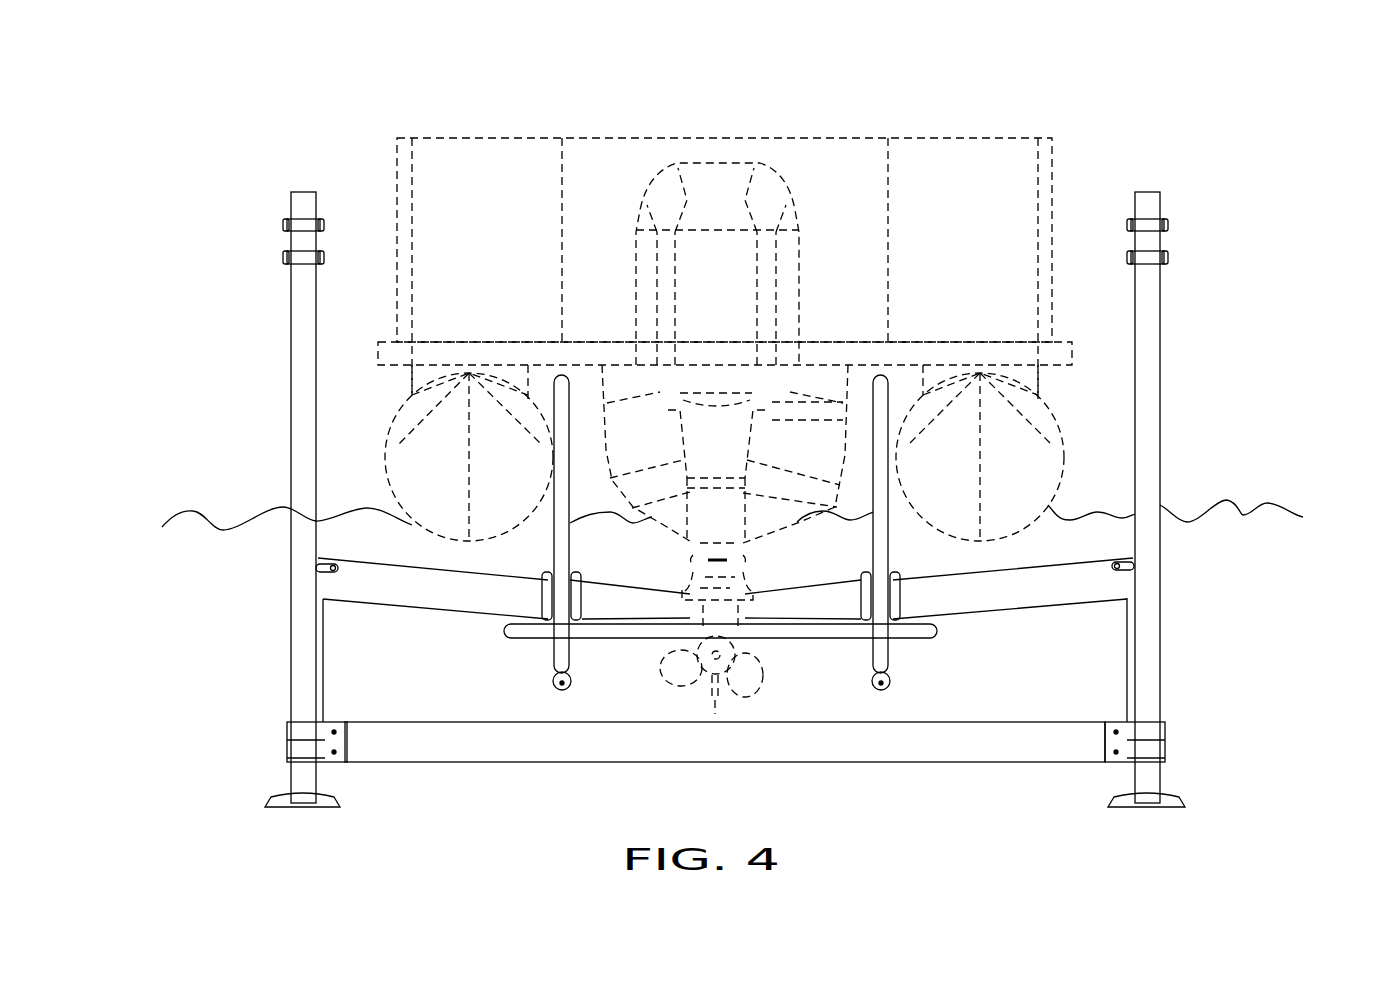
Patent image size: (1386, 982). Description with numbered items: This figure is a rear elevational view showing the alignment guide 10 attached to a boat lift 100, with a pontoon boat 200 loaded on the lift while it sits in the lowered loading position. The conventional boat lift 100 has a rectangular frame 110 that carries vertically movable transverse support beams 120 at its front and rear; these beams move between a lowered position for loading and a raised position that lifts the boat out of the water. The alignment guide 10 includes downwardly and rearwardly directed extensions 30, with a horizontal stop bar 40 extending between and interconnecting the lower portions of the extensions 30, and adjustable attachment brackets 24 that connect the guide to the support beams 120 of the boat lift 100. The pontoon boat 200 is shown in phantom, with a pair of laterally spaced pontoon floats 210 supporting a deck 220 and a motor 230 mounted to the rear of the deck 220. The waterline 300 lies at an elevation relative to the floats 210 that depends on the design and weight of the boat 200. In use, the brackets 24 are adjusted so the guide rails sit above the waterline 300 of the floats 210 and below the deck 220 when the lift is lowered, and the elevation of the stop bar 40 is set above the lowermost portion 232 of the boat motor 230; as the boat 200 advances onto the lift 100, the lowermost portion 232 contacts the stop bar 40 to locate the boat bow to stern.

The alignment guide 10 is at (540, 715).
The attachment bracket 24 is at (546, 576).
The extension 30 is at (558, 432).
The horizontal stop bar 40 is at (797, 642).
The boat lift 100 is at (222, 768).
The rectangular frame 110 is at (303, 290).
The transverse support beam 120 is at (397, 578).
The pontoon boat 200 is at (713, 92).
The pontoon float 210 is at (424, 472).
The deck 220 is at (390, 352).
The motor 230 is at (720, 290).
The lowermost portion 232 is at (715, 712).
The waterline 300 is at (178, 517).